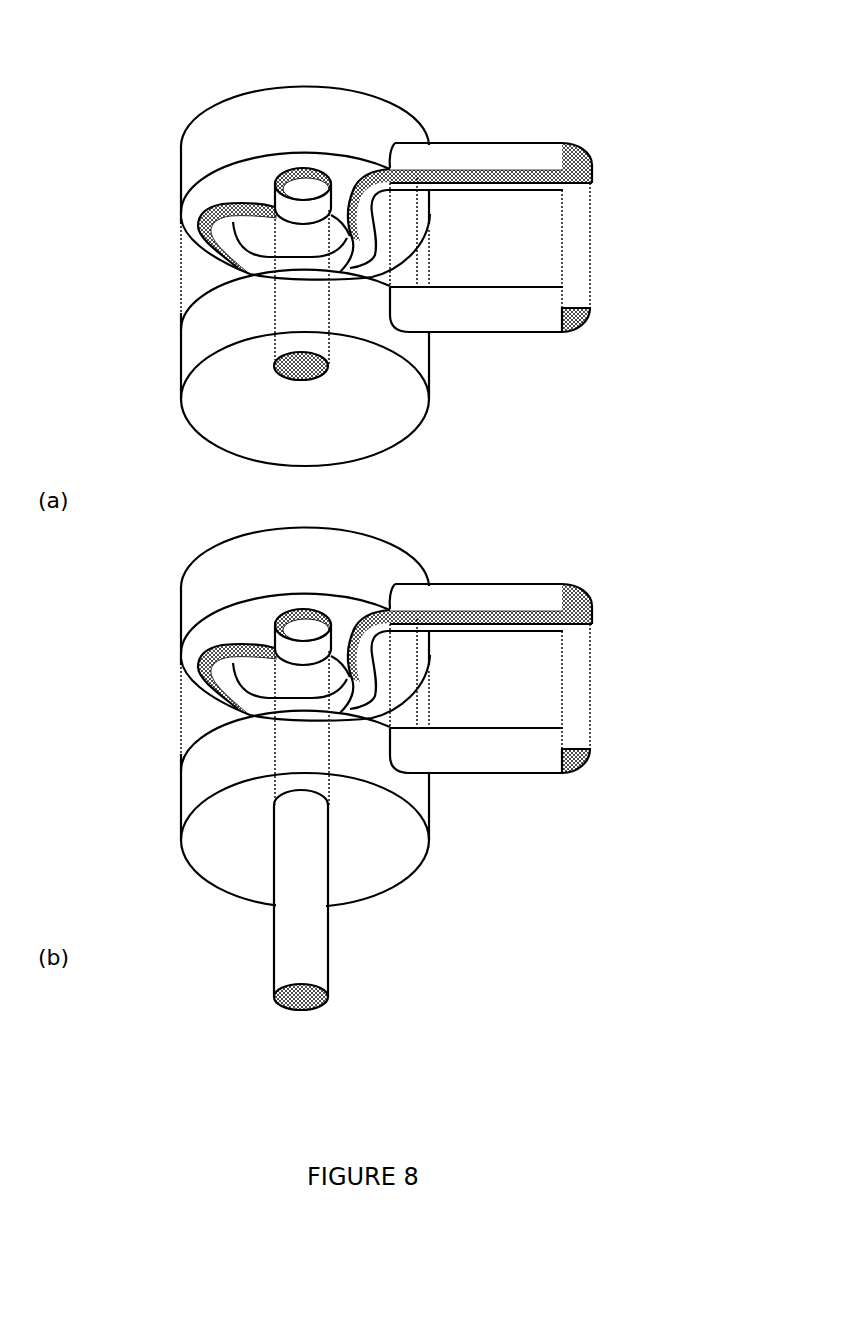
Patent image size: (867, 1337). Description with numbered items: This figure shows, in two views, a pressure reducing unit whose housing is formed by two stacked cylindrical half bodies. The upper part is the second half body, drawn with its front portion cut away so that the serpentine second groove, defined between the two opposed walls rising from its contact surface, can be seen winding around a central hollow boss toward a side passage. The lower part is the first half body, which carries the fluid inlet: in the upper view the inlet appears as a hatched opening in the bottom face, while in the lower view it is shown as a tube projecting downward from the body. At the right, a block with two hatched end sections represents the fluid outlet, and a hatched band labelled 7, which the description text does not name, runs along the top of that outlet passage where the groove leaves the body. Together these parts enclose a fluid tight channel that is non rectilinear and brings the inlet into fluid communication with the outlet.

The outlet channel 7 is at (418, 168).